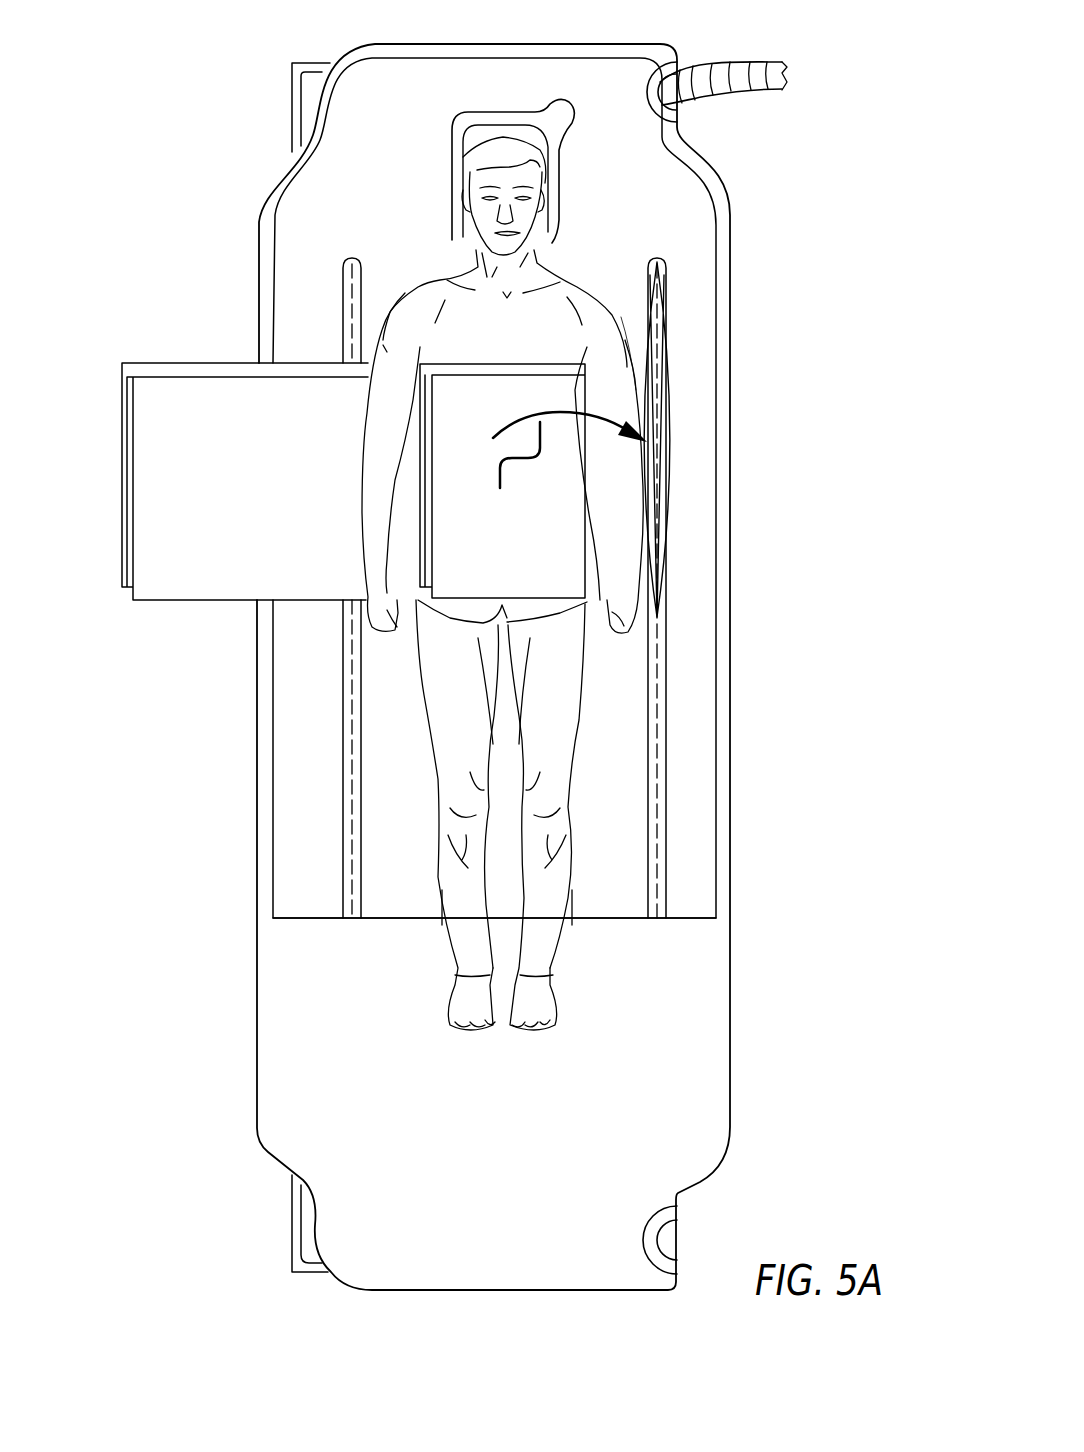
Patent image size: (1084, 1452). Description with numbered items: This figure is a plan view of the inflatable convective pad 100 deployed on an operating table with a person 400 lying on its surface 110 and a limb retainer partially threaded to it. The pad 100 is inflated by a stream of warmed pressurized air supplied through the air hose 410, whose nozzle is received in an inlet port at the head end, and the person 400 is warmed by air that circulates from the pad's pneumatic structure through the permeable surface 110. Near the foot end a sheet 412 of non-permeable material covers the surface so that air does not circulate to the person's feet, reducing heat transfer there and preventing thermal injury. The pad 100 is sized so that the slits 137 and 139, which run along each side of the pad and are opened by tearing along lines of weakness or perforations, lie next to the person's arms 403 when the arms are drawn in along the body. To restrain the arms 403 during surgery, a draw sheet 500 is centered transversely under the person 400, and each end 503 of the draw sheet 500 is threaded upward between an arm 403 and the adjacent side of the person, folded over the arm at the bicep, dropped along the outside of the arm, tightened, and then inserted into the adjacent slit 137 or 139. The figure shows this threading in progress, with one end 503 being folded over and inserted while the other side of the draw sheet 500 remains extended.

The inflatable convective pad 100 is at (783, 203).
The surface 110 is at (688, 204).
The slit 137 is at (352, 704).
The slit 139 is at (655, 418).
The person 400 is at (436, 240).
The arms 403 is at (607, 357).
The air hose 410 is at (769, 64).
The sheet of non-permeable material 412 is at (697, 995).
The draw sheet 500 is at (202, 390).
The end of the draw sheet 503 is at (528, 575).